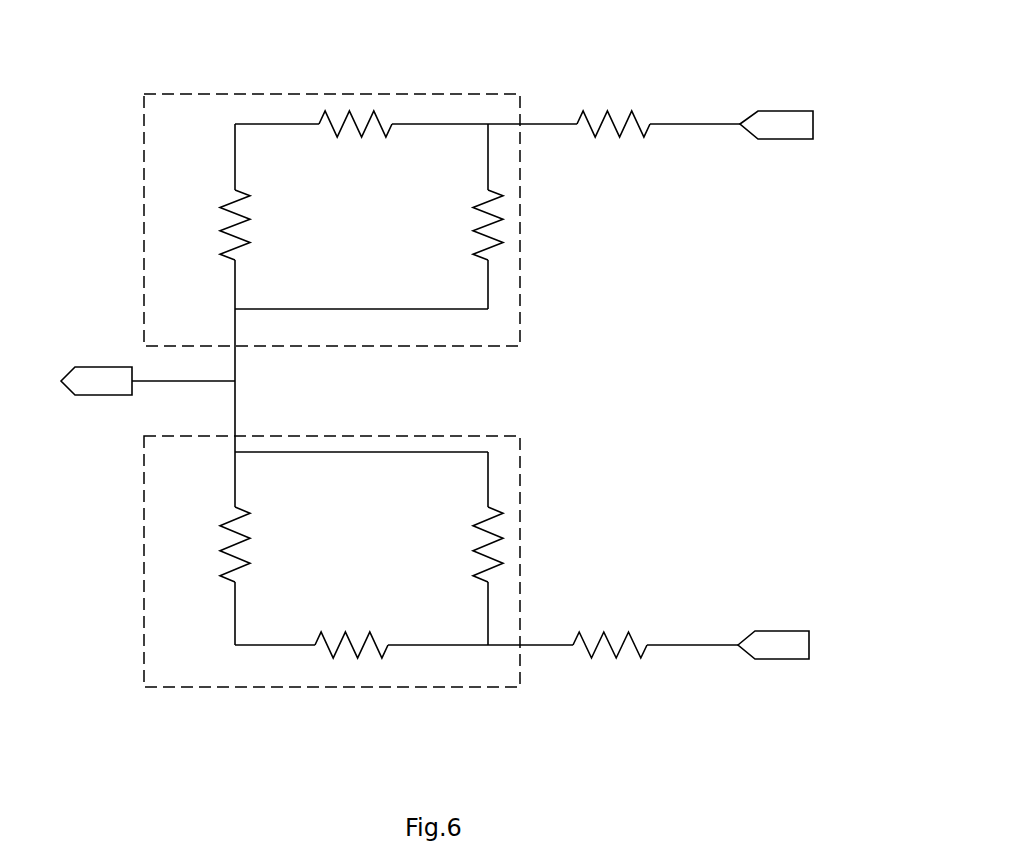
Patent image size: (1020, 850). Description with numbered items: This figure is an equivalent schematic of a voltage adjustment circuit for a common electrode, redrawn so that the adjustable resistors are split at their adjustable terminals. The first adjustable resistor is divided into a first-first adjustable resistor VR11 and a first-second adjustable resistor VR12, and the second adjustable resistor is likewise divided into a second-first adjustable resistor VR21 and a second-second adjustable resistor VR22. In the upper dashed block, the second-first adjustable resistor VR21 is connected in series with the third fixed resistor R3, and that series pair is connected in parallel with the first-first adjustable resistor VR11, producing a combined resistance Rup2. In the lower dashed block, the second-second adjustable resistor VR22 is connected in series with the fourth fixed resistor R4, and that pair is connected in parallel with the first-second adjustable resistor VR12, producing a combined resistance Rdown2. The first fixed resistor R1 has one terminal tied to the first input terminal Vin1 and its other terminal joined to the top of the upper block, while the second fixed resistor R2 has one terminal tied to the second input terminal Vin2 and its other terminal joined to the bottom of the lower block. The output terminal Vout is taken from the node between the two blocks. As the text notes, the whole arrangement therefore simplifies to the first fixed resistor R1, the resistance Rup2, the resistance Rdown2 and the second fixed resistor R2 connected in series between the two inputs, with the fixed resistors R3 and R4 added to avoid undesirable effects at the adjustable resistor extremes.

The resistance Rup2 is at (144, 94).
The resistance Rdown2 is at (144, 687).
The first fixed resistor R1 is at (613, 139).
The second fixed resistor R2 is at (610, 659).
The third fixed resistor R3 is at (355, 138).
The fourth fixed resistor R4 is at (351, 659).
The first-first adjustable resistor VR11 is at (460, 225).
The first-second adjustable resistor VR12 is at (460, 544).
The second-first adjustable resistor VR21 is at (206, 225).
The second-second adjustable resistor VR22 is at (206, 544).
The first input terminal Vin1 is at (799, 126).
The second input terminal Vin2 is at (797, 646).
The output terminal Vout is at (96, 365).